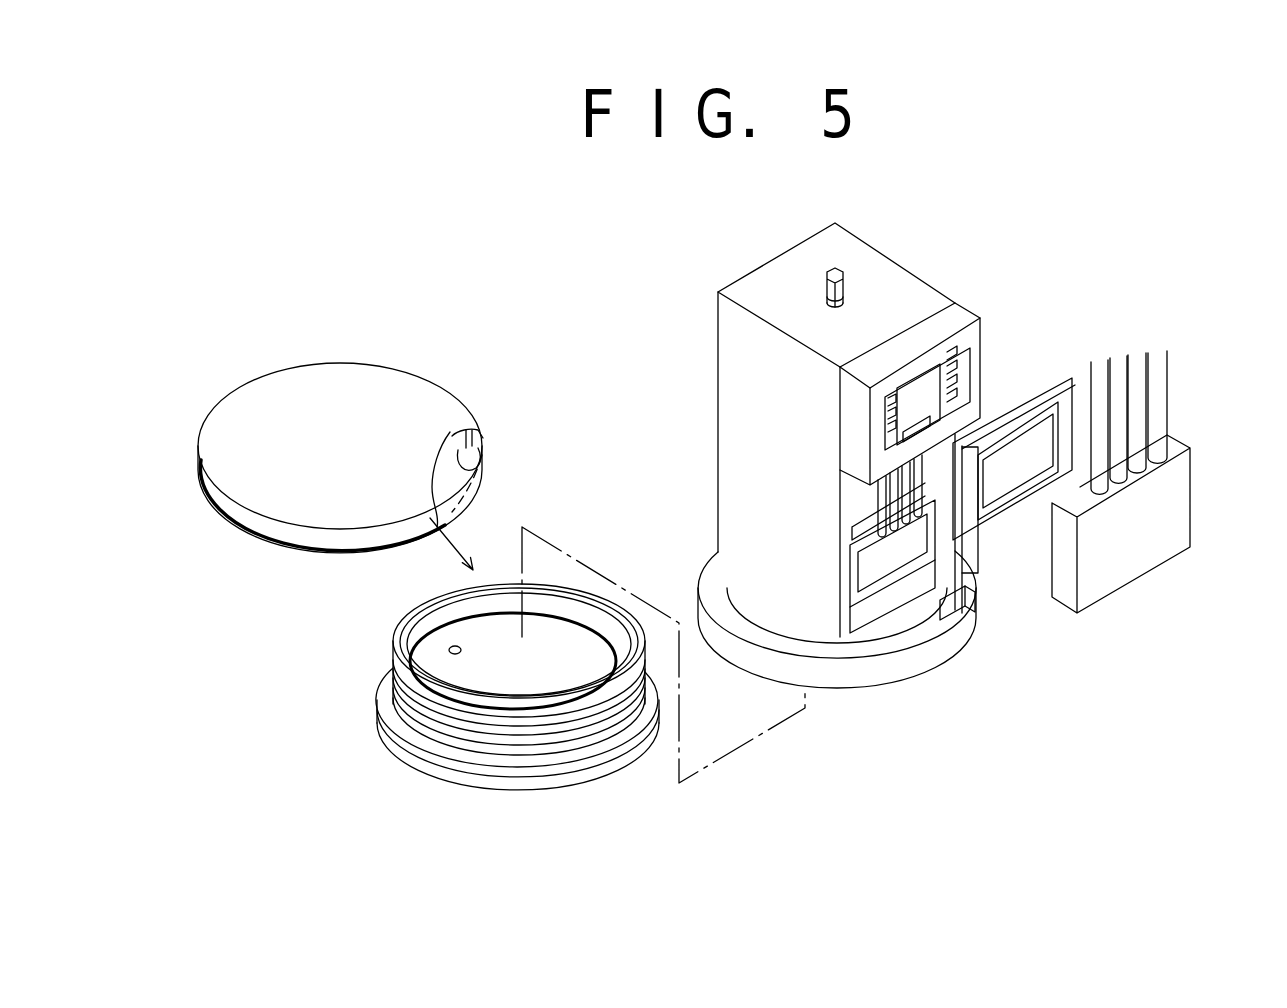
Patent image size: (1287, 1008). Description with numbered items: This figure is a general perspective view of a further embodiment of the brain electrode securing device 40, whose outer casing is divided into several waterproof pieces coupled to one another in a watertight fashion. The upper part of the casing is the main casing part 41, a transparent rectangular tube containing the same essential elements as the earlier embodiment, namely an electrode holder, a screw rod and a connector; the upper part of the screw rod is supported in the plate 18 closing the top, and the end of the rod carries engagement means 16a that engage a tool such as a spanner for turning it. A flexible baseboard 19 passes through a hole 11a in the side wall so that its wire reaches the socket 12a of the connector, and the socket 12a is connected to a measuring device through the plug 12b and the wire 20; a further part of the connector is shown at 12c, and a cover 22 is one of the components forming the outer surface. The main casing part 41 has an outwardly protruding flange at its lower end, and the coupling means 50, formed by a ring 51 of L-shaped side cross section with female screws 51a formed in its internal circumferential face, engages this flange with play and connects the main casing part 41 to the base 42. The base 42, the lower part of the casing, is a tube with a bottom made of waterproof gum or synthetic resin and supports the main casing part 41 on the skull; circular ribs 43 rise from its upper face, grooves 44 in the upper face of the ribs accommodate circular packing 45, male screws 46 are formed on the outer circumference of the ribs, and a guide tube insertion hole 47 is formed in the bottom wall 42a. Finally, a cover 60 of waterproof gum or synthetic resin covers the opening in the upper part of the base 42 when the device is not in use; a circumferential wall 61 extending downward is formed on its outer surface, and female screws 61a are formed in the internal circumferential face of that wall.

The brain electrode securing device 40 is at (934, 465).
The main casing part 41 is at (735, 408).
The plate 18 is at (897, 285).
The engagement means 16a is at (823, 285).
The socket 12a is at (985, 343).
The plug 12b is at (1180, 515).
The connector frame 12c is at (1045, 380).
The flexible baseboard 19 is at (918, 470).
The wire 20 is at (1158, 388).
The cover 22 is at (855, 630).
The hole 11a is at (885, 600).
The coupling means 50 is at (837, 598).
The ring 51 is at (973, 600).
The female screws 51a is at (960, 623).
The cover 60 is at (380, 433).
The disc body 61 is at (272, 532).
The female screws 61a is at (472, 465).
The base 42 is at (537, 715).
The bottom wall 42a is at (495, 690).
The circular ribs 43 is at (407, 645).
The grooves 44 is at (398, 710).
The circular packing 45 is at (410, 672).
The male screws 46 is at (590, 723).
The guide tube insertion hole 47 is at (450, 647).